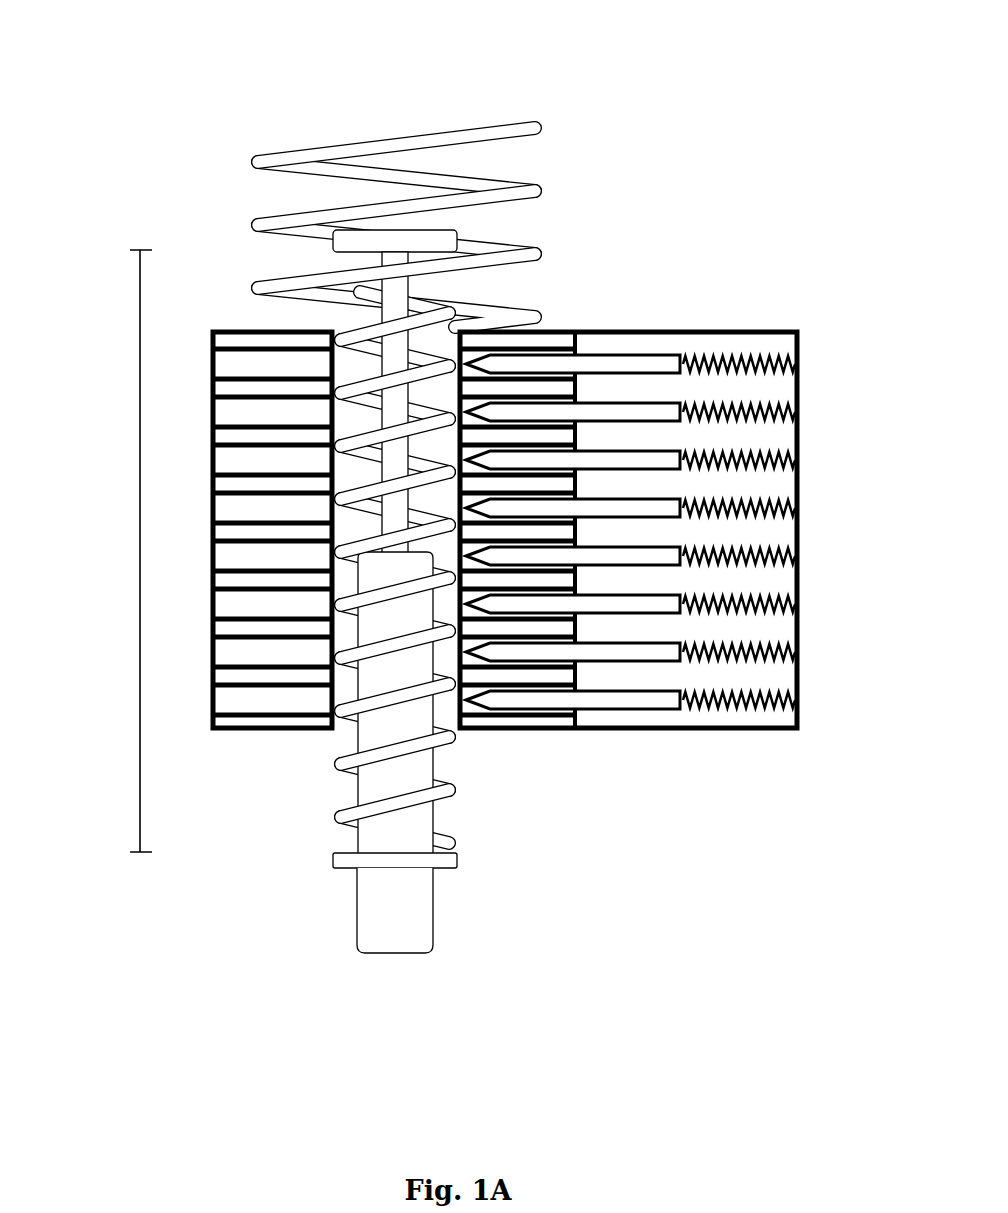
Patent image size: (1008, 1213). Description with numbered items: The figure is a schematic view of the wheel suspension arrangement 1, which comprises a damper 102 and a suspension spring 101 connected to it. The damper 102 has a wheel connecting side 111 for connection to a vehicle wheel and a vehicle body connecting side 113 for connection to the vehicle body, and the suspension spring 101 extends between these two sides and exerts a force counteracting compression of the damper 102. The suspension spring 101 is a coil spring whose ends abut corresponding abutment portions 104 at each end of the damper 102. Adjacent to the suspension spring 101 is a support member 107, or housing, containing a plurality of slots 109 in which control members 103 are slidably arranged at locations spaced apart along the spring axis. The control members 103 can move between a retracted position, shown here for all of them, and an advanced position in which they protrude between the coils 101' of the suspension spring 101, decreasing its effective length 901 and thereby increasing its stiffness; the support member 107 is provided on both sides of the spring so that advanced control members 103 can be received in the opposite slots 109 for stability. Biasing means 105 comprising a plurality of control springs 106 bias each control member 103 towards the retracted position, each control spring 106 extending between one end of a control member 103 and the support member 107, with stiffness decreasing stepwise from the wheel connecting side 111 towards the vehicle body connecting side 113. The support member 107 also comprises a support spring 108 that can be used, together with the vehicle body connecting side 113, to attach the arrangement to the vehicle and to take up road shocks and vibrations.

The wheel suspension arrangement 1 is at (178, 130).
The vehicle body connecting side 113 is at (400, 230).
The support spring 108 is at (540, 187).
The abutment portion 104 is at (358, 253).
The slot 109 is at (240, 364).
The control member 103 is at (600, 507).
The control spring 106 is at (797, 375).
The biasing means 105 is at (822, 688).
The support member 107 is at (578, 730).
The suspension spring 101 is at (524, 731).
The coils 101' is at (320, 547).
The damper 102 is at (355, 838).
The wheel connecting side 111 is at (377, 953).
The effective length 901 is at (140, 549).